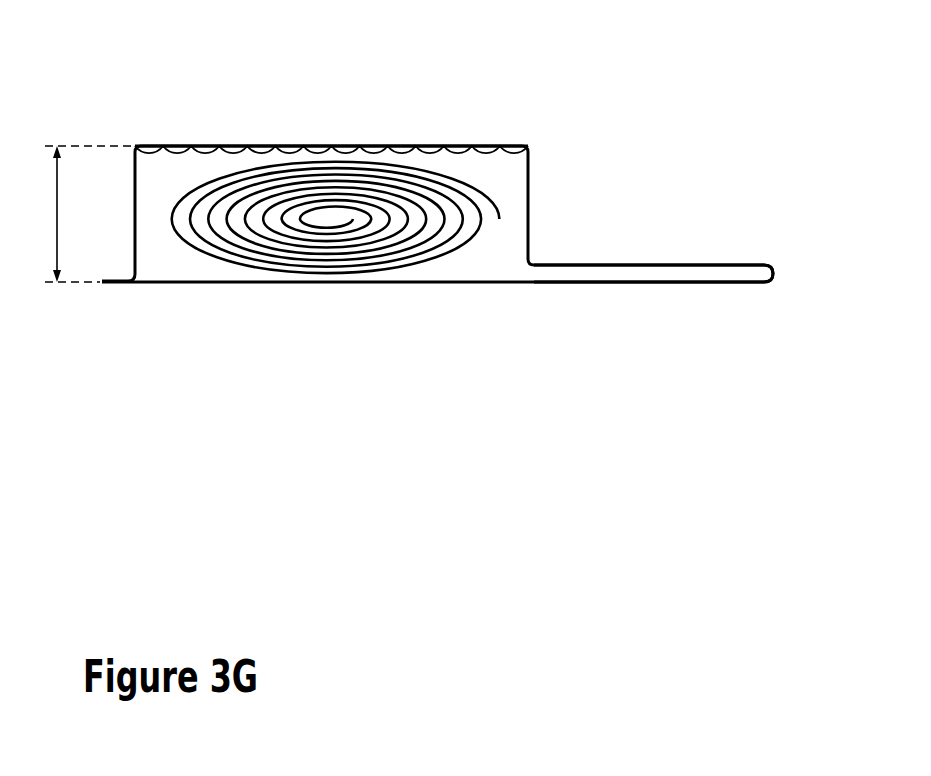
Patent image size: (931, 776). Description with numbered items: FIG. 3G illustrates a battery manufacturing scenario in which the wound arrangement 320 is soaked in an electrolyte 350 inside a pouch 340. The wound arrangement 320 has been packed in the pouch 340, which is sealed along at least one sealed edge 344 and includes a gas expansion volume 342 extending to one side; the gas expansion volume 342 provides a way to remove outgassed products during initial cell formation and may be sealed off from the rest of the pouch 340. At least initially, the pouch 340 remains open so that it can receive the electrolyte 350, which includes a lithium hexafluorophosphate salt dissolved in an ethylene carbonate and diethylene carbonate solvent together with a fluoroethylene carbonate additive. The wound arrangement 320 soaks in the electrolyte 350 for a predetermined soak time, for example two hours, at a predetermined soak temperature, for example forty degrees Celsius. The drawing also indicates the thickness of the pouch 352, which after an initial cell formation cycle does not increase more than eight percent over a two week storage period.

The wound arrangement 320 is at (502, 218).
The pouch 340 is at (500, 145).
The gas expansion volume 342 is at (733, 264).
The sealed edge 344 is at (112, 283).
The electrolyte 350 is at (157, 163).
The thickness of the pouch 352 is at (58, 217).